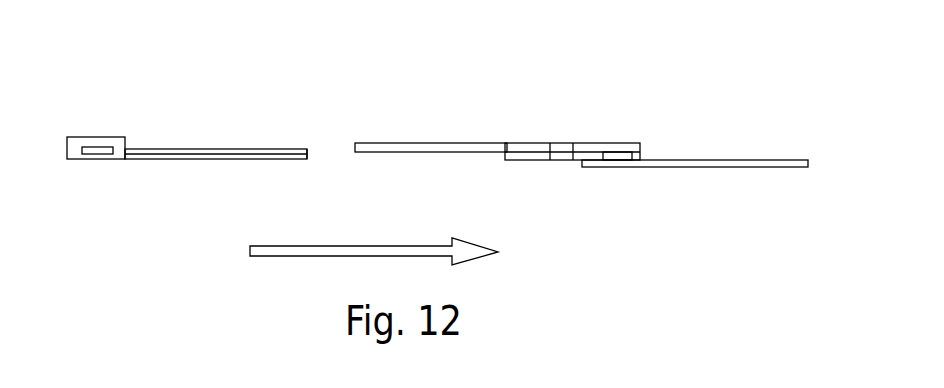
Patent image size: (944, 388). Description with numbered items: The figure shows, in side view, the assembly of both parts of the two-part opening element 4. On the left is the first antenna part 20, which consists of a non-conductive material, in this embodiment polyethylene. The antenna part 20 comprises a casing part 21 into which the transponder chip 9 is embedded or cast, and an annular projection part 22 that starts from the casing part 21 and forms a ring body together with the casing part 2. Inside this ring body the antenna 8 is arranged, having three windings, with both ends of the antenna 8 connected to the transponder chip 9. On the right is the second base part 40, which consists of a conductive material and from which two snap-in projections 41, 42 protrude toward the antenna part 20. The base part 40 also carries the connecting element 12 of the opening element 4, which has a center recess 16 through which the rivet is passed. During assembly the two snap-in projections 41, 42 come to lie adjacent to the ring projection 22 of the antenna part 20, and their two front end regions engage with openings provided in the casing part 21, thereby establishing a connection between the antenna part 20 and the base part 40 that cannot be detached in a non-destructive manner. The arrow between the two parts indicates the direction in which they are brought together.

The casing part 2 is at (728, 163).
The opening element 4 is at (581, 125).
The base part 40 is at (581, 125).
The antenna 8 is at (175, 153).
The transponder chip 9 is at (100, 153).
The connecting element 12 is at (512, 157).
The center recess 16 is at (550, 148).
The antenna part 20 is at (184, 137).
The casing part 21 is at (75, 147).
The annular projection part 22 is at (302, 148).
The snap-in projection 41 is at (431, 110).
The snap-in projection 42 is at (447, 147).